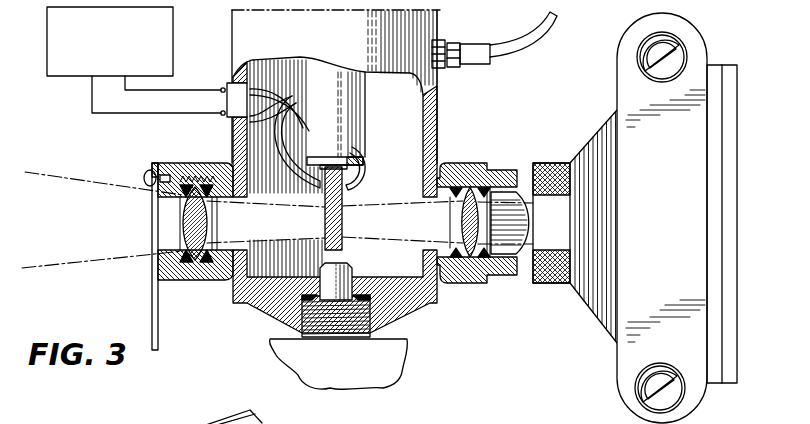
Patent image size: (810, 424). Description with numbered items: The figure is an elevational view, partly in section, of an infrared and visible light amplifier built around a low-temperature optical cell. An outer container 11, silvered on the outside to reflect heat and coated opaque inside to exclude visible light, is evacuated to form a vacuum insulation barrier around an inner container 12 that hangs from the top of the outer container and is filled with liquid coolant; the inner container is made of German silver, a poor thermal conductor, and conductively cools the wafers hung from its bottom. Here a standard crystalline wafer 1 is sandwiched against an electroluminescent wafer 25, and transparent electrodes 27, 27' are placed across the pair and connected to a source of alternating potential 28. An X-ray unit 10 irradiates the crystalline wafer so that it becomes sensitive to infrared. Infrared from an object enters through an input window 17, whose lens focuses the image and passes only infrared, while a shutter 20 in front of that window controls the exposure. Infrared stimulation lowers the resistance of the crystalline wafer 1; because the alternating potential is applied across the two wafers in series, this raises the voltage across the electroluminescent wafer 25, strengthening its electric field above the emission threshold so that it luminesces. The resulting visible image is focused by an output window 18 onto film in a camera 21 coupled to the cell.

The crystalline wafer 1 is at (326, 252).
The X-ray unit 10 is at (395, 347).
The outer container 11 is at (440, 120).
The inner container 12 is at (365, 120).
The input window 17 is at (210, 280).
The output window 18 is at (486, 285).
The shutter 20 is at (158, 327).
The camera 21 is at (617, 358).
The electroluminescent wafer 25 is at (345, 248).
The transparent electrode 27 is at (285, 150).
The transparent electrode 27' is at (366, 179).
The source of alternating potential 28 is at (175, 31).